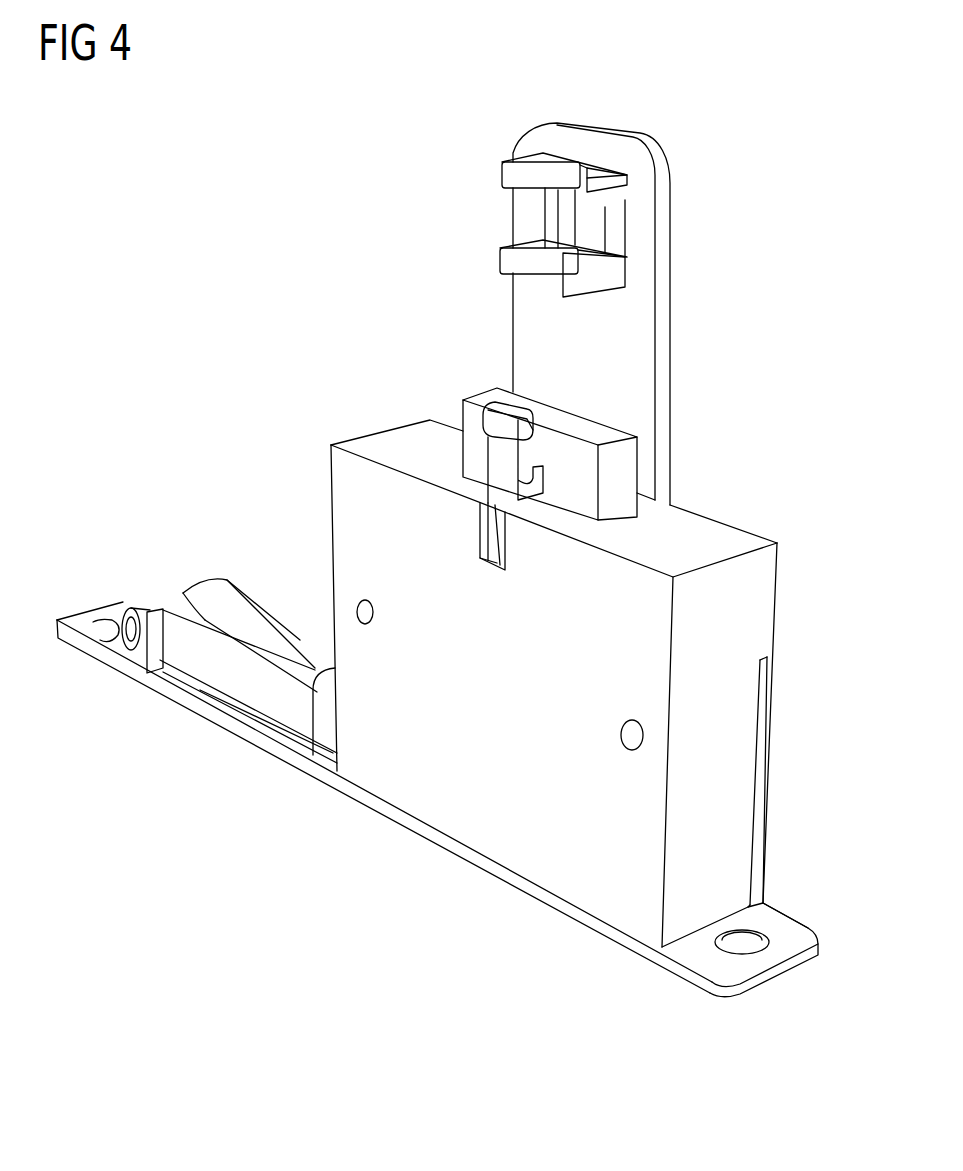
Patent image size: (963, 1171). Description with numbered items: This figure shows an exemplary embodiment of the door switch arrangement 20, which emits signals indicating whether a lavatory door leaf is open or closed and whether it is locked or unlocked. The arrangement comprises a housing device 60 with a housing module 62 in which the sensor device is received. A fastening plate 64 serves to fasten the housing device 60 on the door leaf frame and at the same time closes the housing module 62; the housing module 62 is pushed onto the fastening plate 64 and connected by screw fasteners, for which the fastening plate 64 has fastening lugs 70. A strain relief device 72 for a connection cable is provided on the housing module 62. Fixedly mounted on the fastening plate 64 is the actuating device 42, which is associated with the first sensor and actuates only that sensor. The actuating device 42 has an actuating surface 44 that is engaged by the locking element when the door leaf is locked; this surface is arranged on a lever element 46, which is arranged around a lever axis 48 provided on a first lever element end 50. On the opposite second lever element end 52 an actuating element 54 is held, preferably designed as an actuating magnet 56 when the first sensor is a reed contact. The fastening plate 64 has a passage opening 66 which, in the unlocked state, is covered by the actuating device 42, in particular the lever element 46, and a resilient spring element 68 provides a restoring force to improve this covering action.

The door switch arrangement 20 is at (262, 211).
The actuating device 42 is at (186, 520).
The actuating surface 44 is at (199, 757).
The lever element 46 is at (242, 603).
The lever axis 48 is at (125, 640).
The first lever element end 50 is at (138, 538).
The second lever element end 52 is at (311, 627).
The actuating element 54 is at (325, 730).
The actuating magnet 56 is at (327, 702).
The housing device 60 is at (788, 276).
The housing module 62 is at (712, 537).
The fastening plate 64 is at (765, 733).
The passage opening 66 is at (147, 716).
The resilient spring element 68 is at (183, 605).
The fastening lugs 70 is at (763, 826).
The strain relief device 72 is at (671, 148).